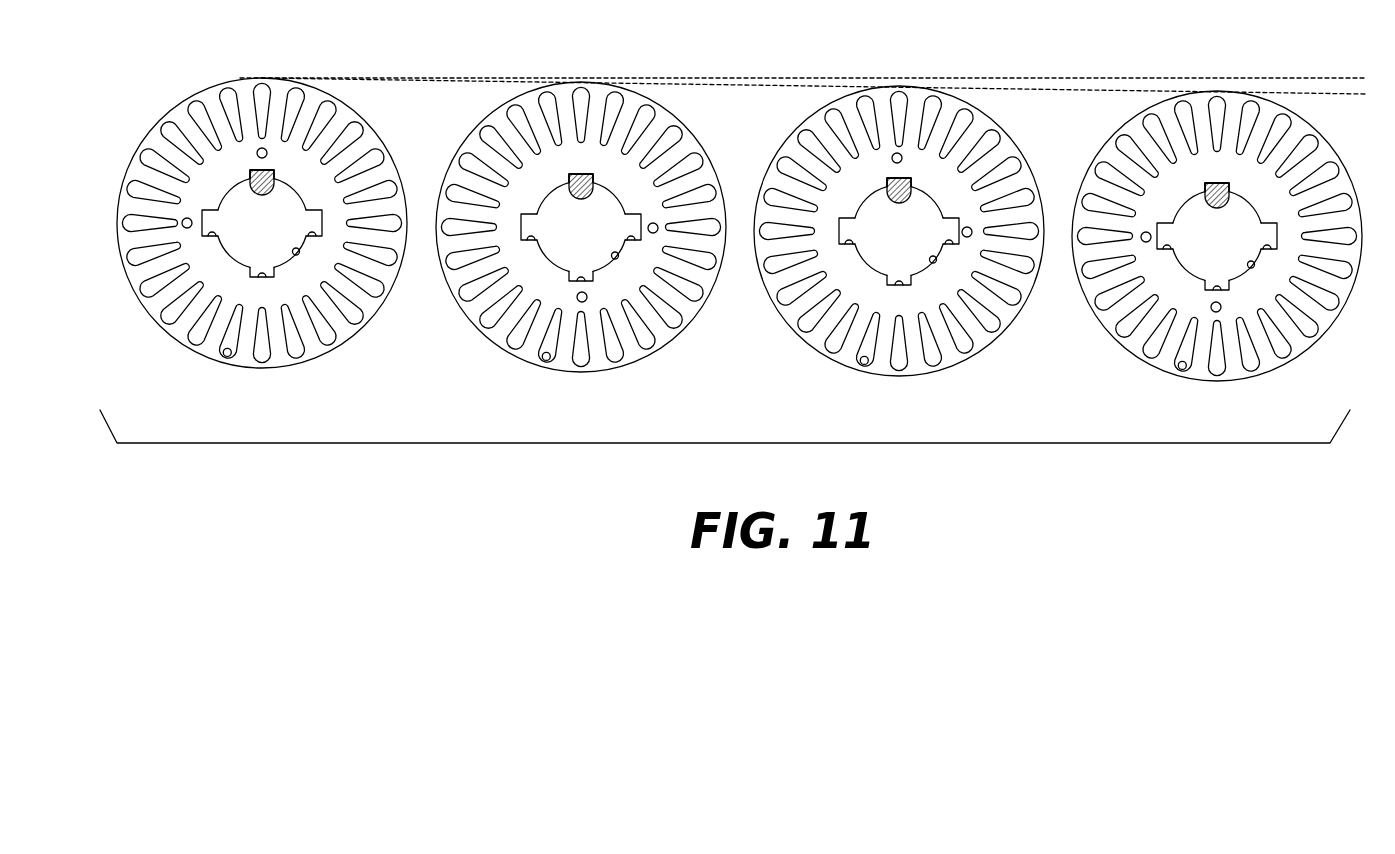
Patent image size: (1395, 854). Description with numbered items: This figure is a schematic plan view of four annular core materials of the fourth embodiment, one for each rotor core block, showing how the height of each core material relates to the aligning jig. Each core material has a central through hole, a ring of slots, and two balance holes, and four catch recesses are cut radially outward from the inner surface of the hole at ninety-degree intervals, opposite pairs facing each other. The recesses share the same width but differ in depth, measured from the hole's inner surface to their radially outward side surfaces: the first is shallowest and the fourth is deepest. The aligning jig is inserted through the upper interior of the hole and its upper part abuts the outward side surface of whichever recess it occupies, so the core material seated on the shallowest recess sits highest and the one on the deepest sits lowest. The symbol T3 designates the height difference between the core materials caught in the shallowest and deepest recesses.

The height difference T3 is at (1343, 118).